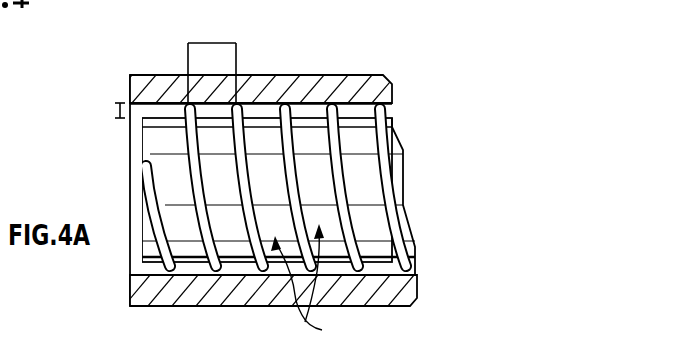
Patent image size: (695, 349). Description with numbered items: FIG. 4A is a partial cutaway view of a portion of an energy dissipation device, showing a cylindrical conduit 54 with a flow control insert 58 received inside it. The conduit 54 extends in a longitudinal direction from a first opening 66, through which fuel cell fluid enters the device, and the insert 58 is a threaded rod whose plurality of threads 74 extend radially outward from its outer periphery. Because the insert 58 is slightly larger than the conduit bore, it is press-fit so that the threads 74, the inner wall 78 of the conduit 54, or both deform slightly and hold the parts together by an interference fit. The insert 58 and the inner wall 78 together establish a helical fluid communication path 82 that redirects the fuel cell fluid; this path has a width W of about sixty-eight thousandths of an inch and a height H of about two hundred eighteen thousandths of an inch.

The conduit 54 is at (160, 75).
The flow control insert 58 is at (128, 163).
The first opening 66 is at (130, 259).
The threads 74 is at (150, 223).
The inner wall 78 is at (256, 106).
The helical fluid communication path 82 is at (310, 284).
The height H is at (115, 111).
The width W is at (212, 43).